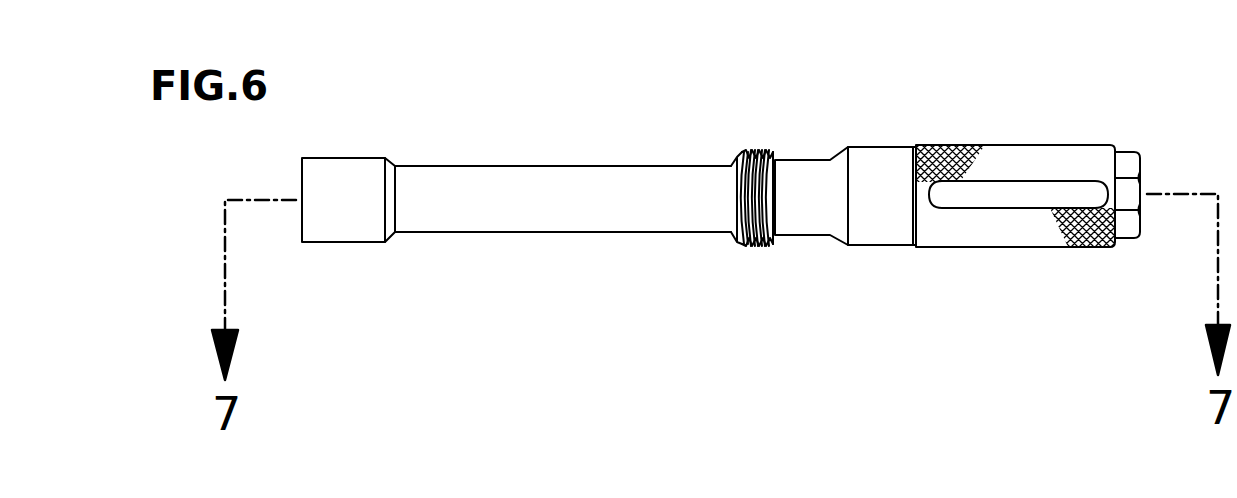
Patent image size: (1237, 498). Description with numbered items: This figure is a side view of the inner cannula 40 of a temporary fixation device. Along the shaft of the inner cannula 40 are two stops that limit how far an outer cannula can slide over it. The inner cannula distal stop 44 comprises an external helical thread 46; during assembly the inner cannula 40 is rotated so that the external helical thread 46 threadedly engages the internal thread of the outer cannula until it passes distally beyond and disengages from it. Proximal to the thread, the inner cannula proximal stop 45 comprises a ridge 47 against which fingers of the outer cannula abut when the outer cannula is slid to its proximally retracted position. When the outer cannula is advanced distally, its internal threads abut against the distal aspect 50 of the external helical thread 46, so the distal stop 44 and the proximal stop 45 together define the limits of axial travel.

The inner cannula 40 is at (739, 183).
The inner cannula distal stop 44 is at (749, 155).
The inner cannula proximal stop 45 is at (913, 147).
The external helical thread 46 is at (768, 156).
The ridge 47 is at (912, 247).
The distal aspect of external helical threads 50 is at (743, 157).